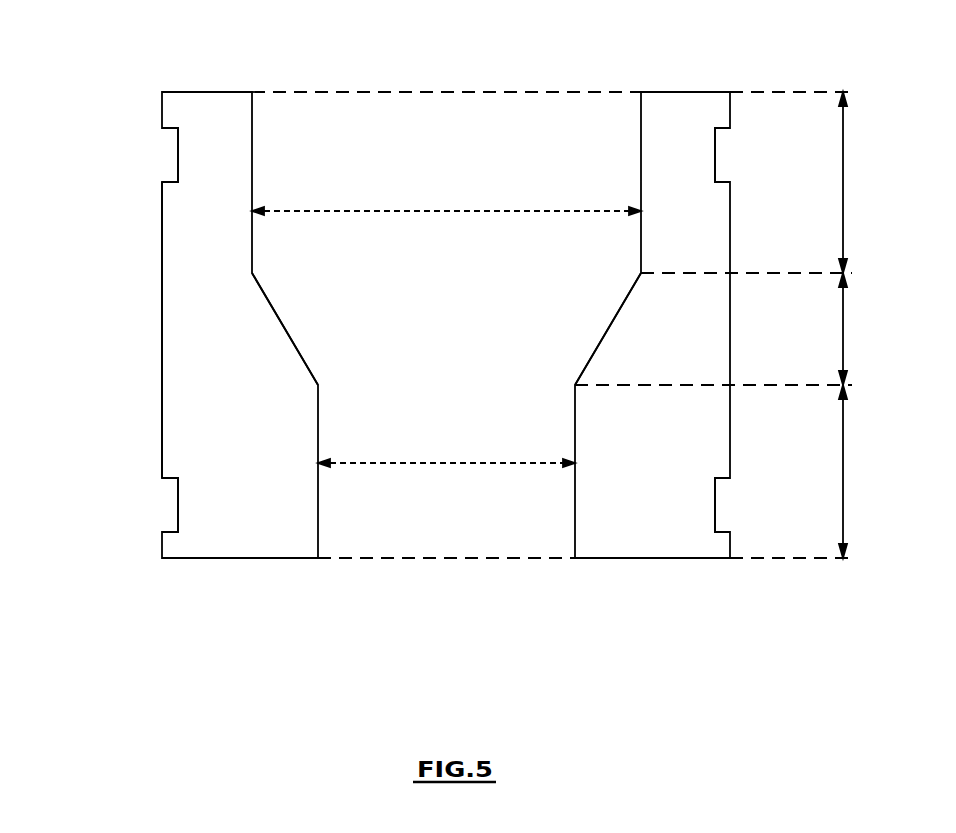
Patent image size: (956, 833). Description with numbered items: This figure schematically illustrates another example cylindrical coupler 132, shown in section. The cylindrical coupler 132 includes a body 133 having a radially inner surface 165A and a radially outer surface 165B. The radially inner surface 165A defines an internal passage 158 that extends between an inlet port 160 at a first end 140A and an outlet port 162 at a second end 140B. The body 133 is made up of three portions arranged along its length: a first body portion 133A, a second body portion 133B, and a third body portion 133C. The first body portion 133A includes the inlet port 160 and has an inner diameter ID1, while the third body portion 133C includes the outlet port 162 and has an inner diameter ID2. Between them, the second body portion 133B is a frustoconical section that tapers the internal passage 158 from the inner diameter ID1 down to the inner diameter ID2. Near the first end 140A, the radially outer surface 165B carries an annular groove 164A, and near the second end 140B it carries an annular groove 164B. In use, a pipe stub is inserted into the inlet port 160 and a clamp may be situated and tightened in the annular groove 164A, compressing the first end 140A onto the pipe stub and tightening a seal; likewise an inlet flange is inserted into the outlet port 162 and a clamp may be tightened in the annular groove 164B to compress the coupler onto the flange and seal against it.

The cylindrical coupler 132 is at (88, 276).
The body 133 is at (185, 320).
The first body portion 133A is at (845, 200).
The second body portion 133B is at (845, 333).
The third body portion 133C is at (845, 464).
The first end 140A is at (312, 60).
The second end 140B is at (261, 590).
The internal passage 158 is at (455, 337).
The inlet port 160 is at (455, 134).
The outlet port 162 is at (455, 546).
The annular groove 164A is at (156, 153).
The annular groove 164B is at (156, 503).
The radially inner surface 165A is at (268, 253).
The radially outer surface 165B is at (146, 397).
The inner diameter ID1 is at (378, 210).
The inner diameter ID2 is at (406, 462).